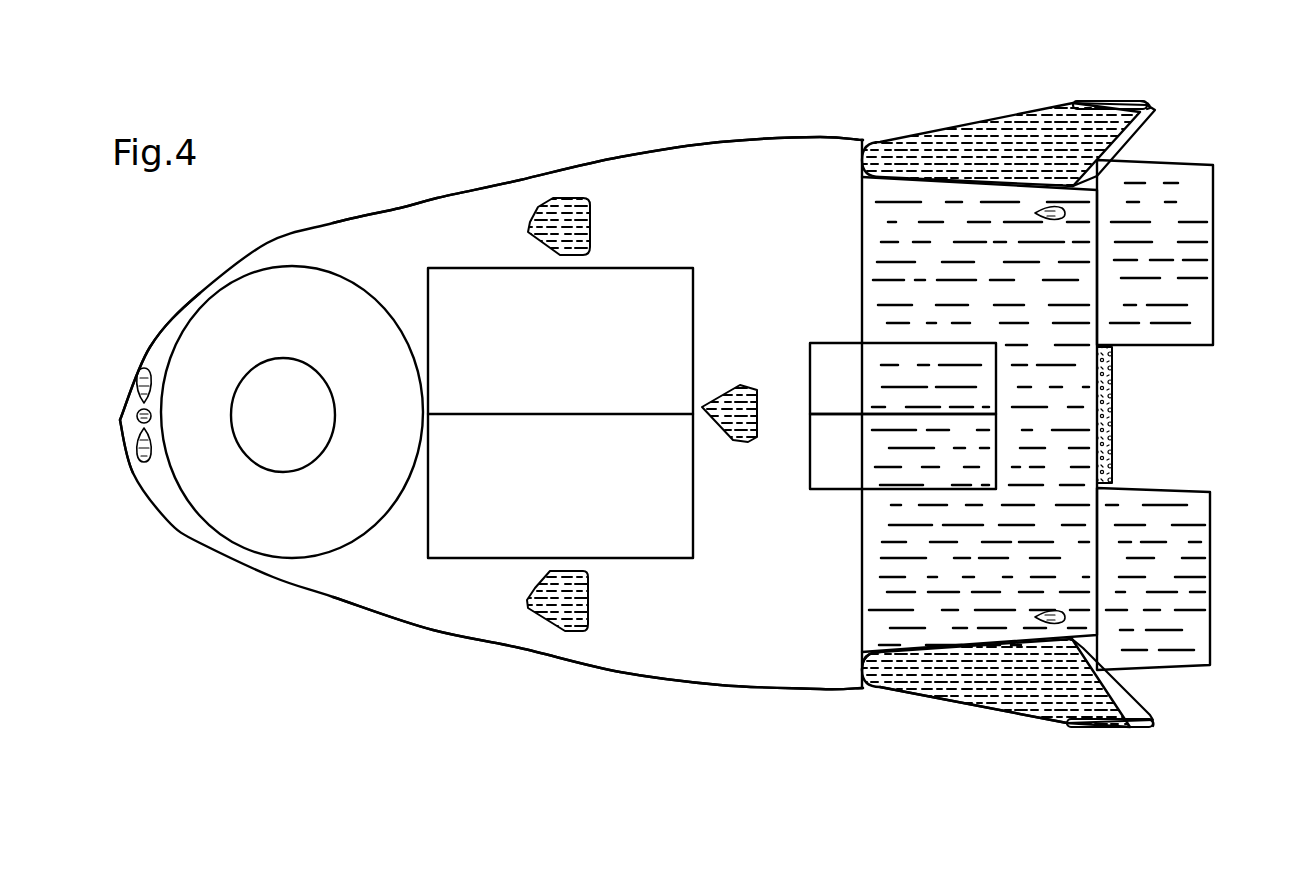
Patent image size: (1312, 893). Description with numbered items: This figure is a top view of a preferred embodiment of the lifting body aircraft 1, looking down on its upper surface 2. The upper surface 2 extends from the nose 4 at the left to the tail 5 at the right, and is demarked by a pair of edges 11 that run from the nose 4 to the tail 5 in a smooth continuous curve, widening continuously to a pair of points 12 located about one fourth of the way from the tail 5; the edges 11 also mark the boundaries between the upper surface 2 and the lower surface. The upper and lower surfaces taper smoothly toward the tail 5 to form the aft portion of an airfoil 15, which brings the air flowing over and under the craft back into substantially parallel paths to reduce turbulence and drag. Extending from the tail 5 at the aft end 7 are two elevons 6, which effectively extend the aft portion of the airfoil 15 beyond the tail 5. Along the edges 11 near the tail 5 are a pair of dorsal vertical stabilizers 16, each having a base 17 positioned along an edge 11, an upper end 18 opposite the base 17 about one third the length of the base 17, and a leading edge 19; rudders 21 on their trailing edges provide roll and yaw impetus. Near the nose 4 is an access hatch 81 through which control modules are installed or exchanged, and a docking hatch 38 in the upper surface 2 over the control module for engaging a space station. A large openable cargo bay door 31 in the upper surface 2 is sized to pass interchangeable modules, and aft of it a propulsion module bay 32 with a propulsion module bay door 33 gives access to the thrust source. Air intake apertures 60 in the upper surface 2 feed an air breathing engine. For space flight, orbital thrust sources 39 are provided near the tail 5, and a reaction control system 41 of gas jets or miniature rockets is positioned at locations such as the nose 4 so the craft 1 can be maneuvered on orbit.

The lifting body aircraft 1 is at (275, 202).
The upper surface 2 is at (748, 168).
The nose 4 is at (142, 352).
The tail 5 is at (1113, 368).
The elevons 6 is at (1213, 158).
The aft end 7 is at (915, 250).
The edges 11 is at (620, 160).
The points 12 is at (864, 143).
The airfoil 15 is at (1053, 567).
The dorsal vertical stabilizers 16 is at (1027, 153).
The base 17 is at (860, 641).
The upper end 18 is at (1117, 102).
The leading edge 19 is at (937, 698).
The rudders 21 is at (1158, 110).
The cargo bay door 31 is at (620, 313).
The propulsion module bay 32 is at (833, 460).
The propulsion module bay door 33 is at (835, 358).
The docking hatch 38 is at (286, 358).
The orbital thrust sources 39 is at (1113, 413).
The reaction control system 41 is at (140, 467).
The air intake apertures 60 is at (545, 203).
The access hatch 81 is at (273, 565).